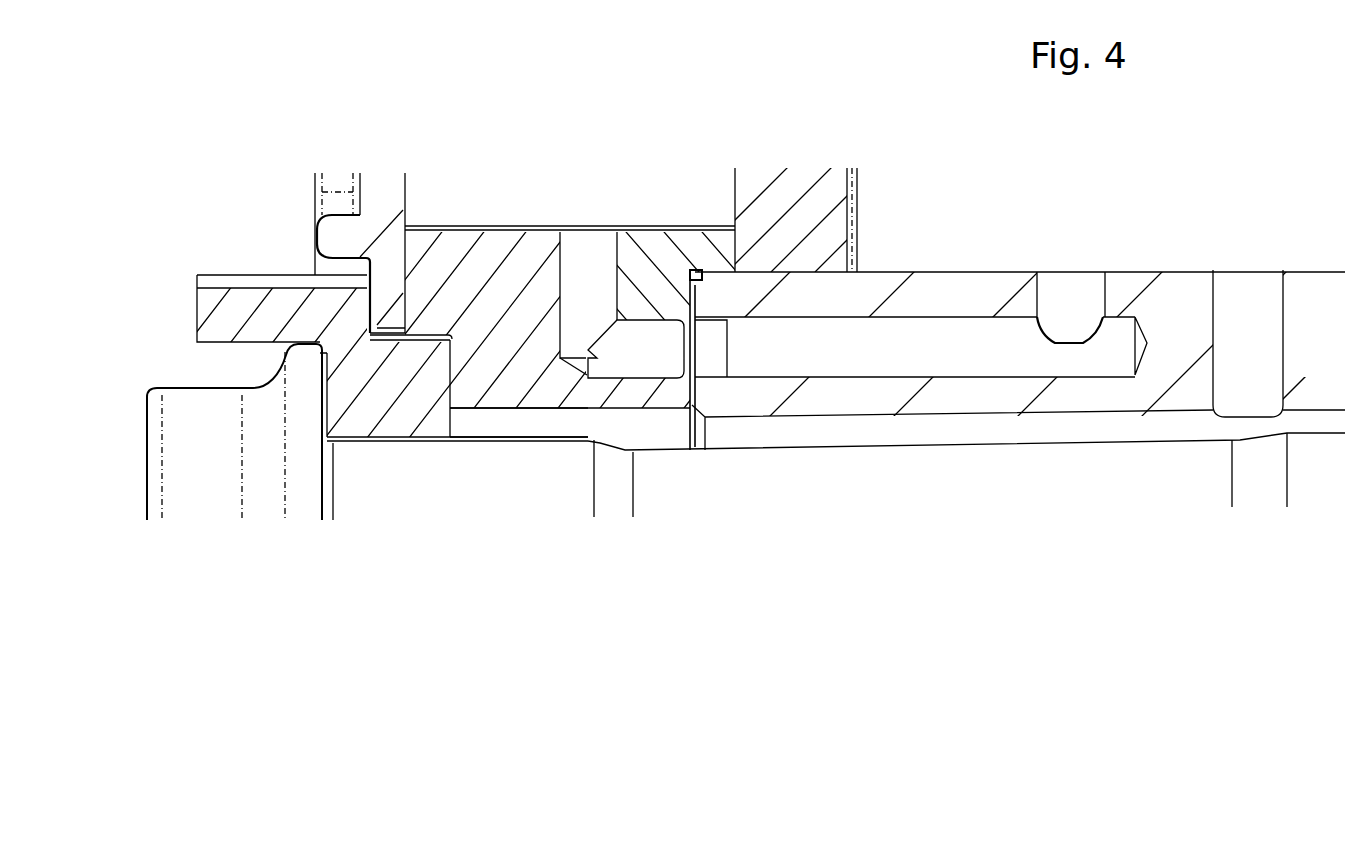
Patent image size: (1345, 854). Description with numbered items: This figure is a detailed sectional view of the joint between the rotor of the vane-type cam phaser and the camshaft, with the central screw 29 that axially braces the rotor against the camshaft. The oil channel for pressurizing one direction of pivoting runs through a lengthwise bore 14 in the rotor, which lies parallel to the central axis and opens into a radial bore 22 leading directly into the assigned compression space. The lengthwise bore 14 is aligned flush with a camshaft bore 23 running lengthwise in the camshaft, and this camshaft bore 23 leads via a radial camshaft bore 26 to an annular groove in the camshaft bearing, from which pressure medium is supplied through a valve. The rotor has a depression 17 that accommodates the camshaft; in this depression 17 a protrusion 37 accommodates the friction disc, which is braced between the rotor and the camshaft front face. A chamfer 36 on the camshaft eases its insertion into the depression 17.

The lengthwise bore 14 is at (647, 342).
The depression 17 is at (722, 286).
The radial bore 22 is at (587, 263).
The camshaft bore 23 is at (920, 350).
The radial camshaft bore 26 is at (1082, 290).
The central screw 29 is at (473, 482).
The chamfer 36 is at (697, 265).
The protrusion 37 is at (693, 278).